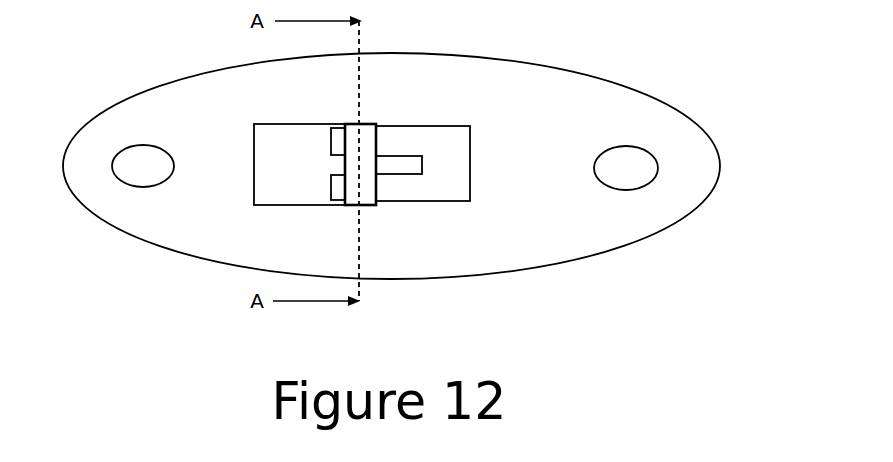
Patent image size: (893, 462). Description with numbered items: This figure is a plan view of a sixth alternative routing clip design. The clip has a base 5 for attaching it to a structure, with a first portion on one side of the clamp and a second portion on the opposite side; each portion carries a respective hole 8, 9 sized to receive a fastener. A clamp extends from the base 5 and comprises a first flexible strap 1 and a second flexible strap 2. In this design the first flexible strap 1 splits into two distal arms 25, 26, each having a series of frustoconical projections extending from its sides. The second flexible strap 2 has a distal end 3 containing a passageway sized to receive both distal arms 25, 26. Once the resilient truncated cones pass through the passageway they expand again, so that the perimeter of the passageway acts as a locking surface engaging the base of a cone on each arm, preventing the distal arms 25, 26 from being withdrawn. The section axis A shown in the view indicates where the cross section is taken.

The first flexible strap 1 is at (470, 127).
The second flexible strap 2 is at (295, 153).
The distal end 3 is at (375, 124).
The base 5 is at (537, 84).
The hole 8 is at (143, 164).
The hole 9 is at (637, 165).
The distal arm 25 is at (337, 145).
The distal arm 26 is at (337, 185).